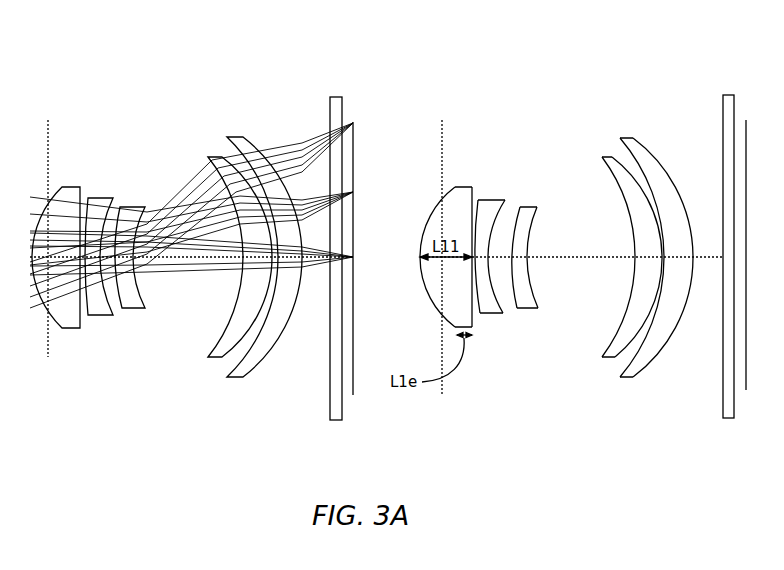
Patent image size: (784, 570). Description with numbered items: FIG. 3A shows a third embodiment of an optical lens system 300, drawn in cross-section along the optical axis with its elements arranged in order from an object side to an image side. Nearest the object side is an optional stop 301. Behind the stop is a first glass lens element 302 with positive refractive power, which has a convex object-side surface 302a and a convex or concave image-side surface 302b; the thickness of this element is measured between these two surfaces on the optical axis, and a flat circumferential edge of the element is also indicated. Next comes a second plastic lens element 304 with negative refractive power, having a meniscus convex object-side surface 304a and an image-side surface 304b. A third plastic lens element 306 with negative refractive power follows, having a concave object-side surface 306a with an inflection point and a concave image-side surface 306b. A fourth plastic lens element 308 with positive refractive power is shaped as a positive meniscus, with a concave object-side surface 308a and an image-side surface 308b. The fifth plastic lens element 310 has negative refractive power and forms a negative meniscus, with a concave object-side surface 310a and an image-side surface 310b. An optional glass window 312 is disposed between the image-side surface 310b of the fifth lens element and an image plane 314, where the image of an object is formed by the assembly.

The optical lens system 300 is at (647, 72).
The stop 301 is at (440, 156).
The first glass lens element 302 is at (423, 247).
The object-side surface of first lens element 302a is at (437, 307).
The image-side surface of first lens element 302b is at (465, 278).
The second plastic lens element 304 is at (516, 258).
The object-side surface of second lens element 304a is at (478, 316).
The image-side surface of second lens element 304b is at (500, 293).
The third plastic lens element 306 is at (560, 233).
The object-side surface of third lens element 306a is at (519, 240).
The image-side surface of third lens element 306b is at (531, 278).
The fourth plastic lens element 308 is at (614, 235).
The object-side surface of fourth lens element 308a is at (632, 232).
The image-side surface of fourth lens element 308b is at (652, 296).
The fifth plastic lens element 310 is at (669, 244).
The object-side surface of fifth lens element 310a is at (637, 340).
The image-side surface of fifth lens element 310b is at (683, 312).
The glass window 312 is at (723, 407).
The image plane 314 is at (745, 388).